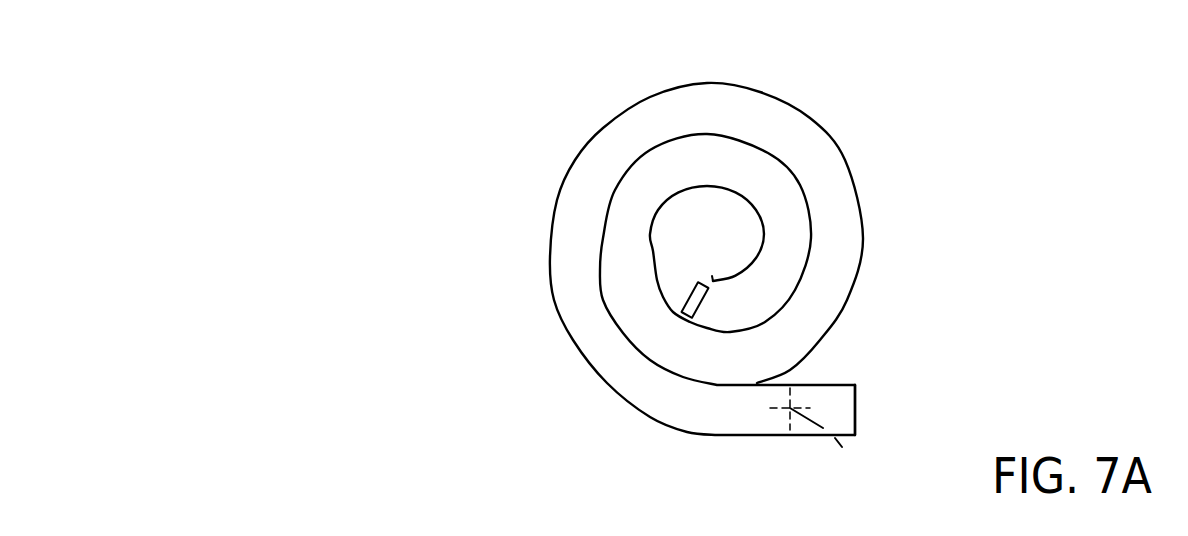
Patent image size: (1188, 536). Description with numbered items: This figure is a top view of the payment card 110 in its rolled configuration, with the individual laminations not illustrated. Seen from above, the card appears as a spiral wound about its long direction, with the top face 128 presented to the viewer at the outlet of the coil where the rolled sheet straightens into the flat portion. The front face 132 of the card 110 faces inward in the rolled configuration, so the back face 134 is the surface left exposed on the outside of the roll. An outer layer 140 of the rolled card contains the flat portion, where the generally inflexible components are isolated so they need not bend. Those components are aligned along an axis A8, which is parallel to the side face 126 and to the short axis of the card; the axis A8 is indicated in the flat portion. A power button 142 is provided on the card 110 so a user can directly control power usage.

The payment card 110 is at (766, 273).
The second end or side face 126 is at (692, 321).
The top face 128 is at (821, 245).
The front face 132 is at (765, 235).
The back face 134 is at (603, 128).
The outer layer 140 is at (660, 243).
The power button 142 is at (688, 302).
The axis A8 is at (850, 462).